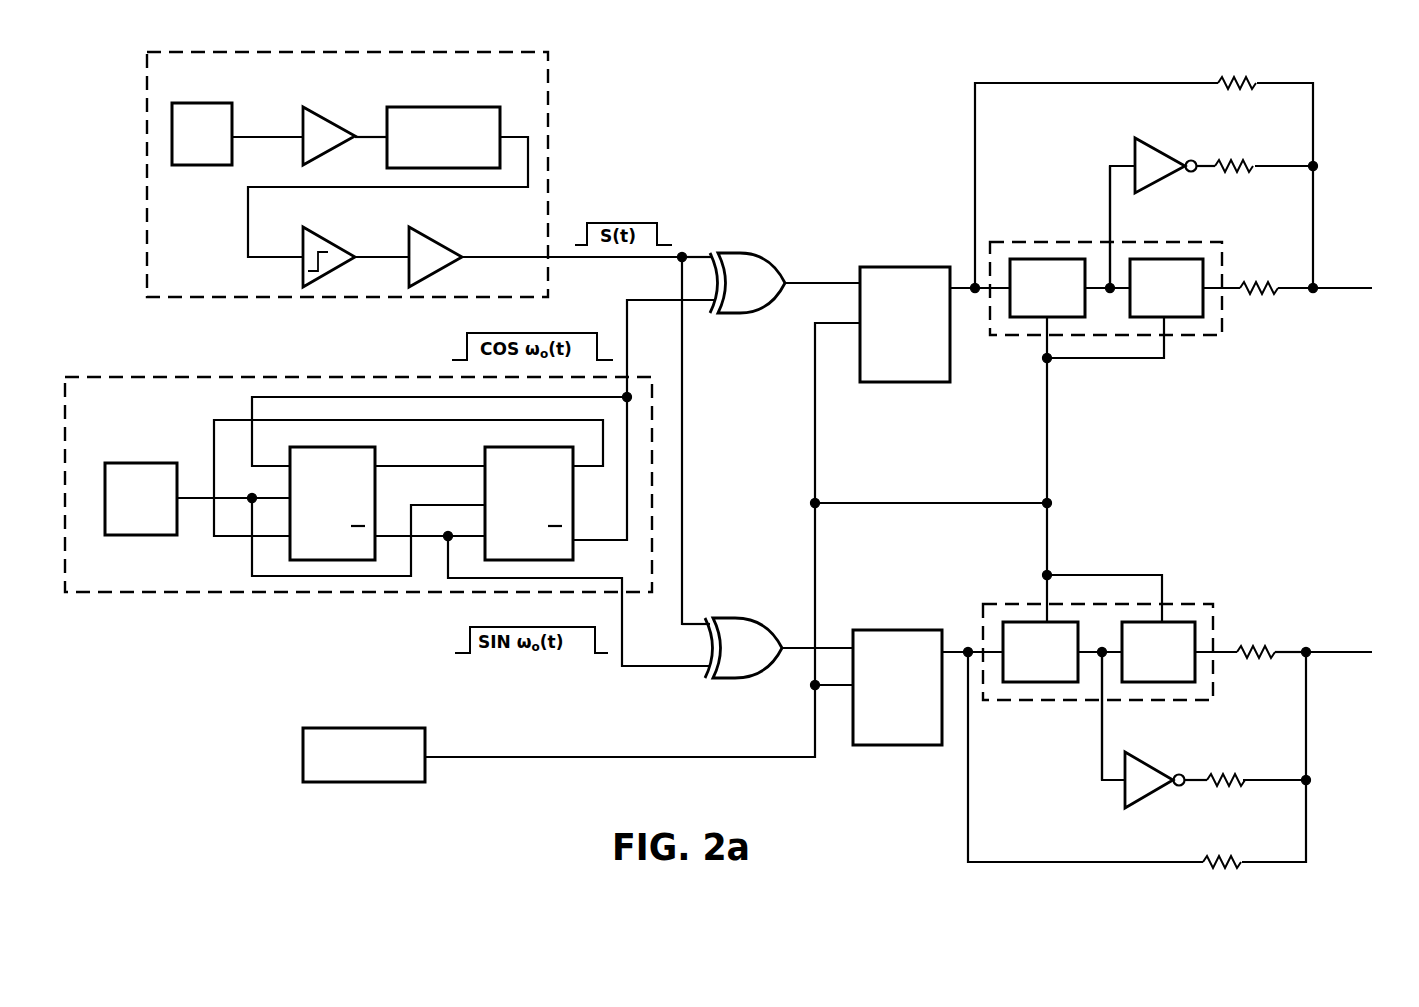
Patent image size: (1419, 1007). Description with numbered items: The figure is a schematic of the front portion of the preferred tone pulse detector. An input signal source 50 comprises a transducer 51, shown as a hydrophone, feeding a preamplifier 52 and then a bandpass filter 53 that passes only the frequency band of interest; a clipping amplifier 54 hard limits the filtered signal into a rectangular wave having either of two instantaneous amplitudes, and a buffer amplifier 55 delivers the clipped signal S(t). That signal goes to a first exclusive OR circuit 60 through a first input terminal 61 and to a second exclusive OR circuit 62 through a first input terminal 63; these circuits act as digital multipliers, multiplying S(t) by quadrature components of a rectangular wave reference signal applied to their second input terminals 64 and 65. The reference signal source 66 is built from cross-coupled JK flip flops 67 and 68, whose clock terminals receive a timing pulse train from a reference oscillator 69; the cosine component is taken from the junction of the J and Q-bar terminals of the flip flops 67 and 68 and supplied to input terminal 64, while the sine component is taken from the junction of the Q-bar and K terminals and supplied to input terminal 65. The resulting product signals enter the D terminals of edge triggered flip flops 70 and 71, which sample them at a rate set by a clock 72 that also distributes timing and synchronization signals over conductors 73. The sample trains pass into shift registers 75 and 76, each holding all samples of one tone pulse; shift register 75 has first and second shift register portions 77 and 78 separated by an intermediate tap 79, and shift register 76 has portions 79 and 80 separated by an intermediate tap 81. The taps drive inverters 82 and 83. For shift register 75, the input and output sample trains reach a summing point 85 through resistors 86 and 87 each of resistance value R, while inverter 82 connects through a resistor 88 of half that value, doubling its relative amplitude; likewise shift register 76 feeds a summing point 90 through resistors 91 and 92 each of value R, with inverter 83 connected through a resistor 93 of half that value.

The input signal source 50 is at (548, 84).
The transducer 51 is at (203, 103).
The preamplifier 52 is at (328, 107).
The bandpass filter 53 is at (438, 107).
The clipping amplifier 54 is at (318, 237).
The buffer amplifier 55 is at (436, 237).
The first exclusive OR circuit 60 is at (759, 252).
The first input terminal 61 is at (698, 256).
The second exclusive OR circuit 62 is at (752, 619).
The first input terminal 63 is at (688, 621).
The second input terminal 64 is at (691, 304).
The second input terminal 65 is at (688, 669).
The reference signal source 66 is at (298, 376).
The JK flip flop 67 is at (376, 456).
The JK flip flop 68 is at (574, 550).
The reference oscillator 69 is at (158, 462).
The edge triggered flip flop 70 is at (880, 266).
The edge triggered flip flop 71 is at (874, 630).
The clock 72 is at (366, 728).
The conductors 73 is at (1012, 503).
The shift register 75 is at (1185, 337).
The shift register 76 is at (1176, 603).
The first shift register portion 77 is at (1028, 259).
The second shift register portion 78 is at (1160, 259).
The intermediate tap 79 is at (1016, 700).
The second shift register portion 80 is at (1180, 700).
The intermediate tap 81 is at (1101, 752).
The inverter 82 is at (1152, 138).
The inverter 83 is at (1150, 795).
The summing point 85 is at (1313, 300).
The resistor 86 is at (1245, 80).
The resistor 87 is at (1270, 290).
The resistor 88 is at (1243, 157).
The summing point 90 is at (1306, 650).
The resistor 91 is at (1238, 864).
The resistor 92 is at (1262, 655).
The resistor 93 is at (1243, 782).